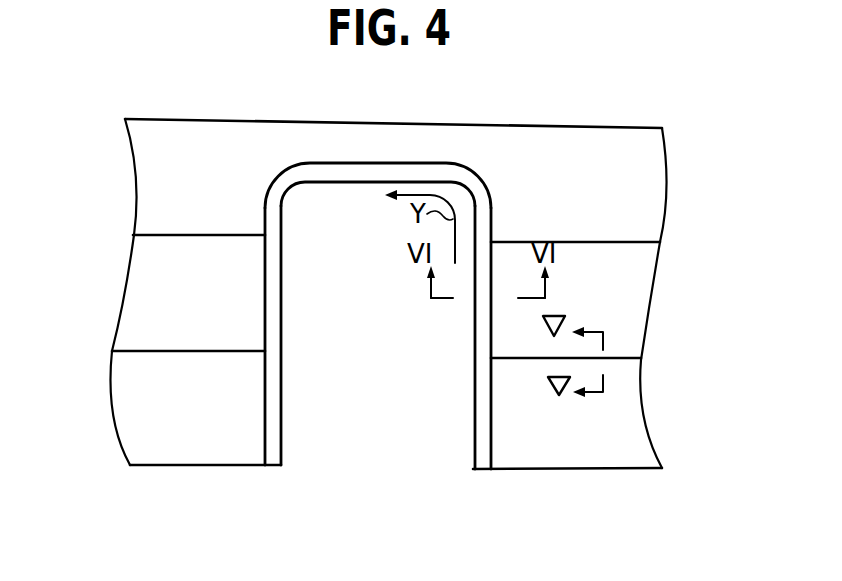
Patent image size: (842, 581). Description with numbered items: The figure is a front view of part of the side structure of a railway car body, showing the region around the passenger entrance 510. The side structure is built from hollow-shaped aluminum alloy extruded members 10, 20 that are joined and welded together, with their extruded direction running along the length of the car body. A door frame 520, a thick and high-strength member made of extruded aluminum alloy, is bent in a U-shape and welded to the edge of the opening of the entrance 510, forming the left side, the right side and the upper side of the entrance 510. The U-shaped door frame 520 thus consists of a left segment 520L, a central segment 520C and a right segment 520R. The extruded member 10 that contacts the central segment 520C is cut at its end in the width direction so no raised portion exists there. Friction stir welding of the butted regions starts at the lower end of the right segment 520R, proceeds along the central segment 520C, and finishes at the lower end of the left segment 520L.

The extruded member 10 is at (583, 165).
The extruded member 20 is at (152, 303).
The entrance 510 is at (334, 440).
The door frame 520 is at (378, 270).
The left segment 520L is at (273, 382).
The right segment 520R is at (478, 332).
The central segment 520C is at (388, 163).